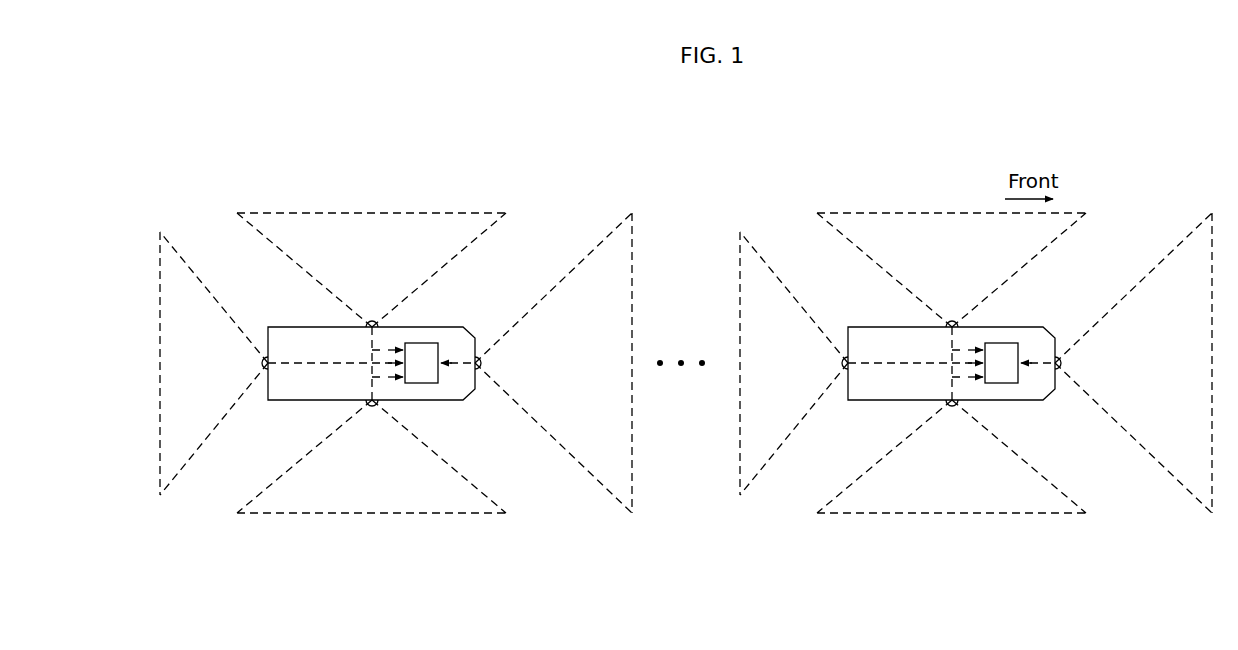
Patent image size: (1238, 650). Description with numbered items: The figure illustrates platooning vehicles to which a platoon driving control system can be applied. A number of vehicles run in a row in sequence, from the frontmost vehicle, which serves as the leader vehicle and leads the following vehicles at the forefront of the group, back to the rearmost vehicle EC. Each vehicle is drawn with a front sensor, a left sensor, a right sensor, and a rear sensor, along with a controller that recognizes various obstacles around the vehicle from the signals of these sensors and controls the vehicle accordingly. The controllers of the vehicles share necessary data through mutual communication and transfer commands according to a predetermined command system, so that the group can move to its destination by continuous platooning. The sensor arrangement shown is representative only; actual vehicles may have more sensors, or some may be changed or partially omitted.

The rearmost vehicle EC is at (469, 318).